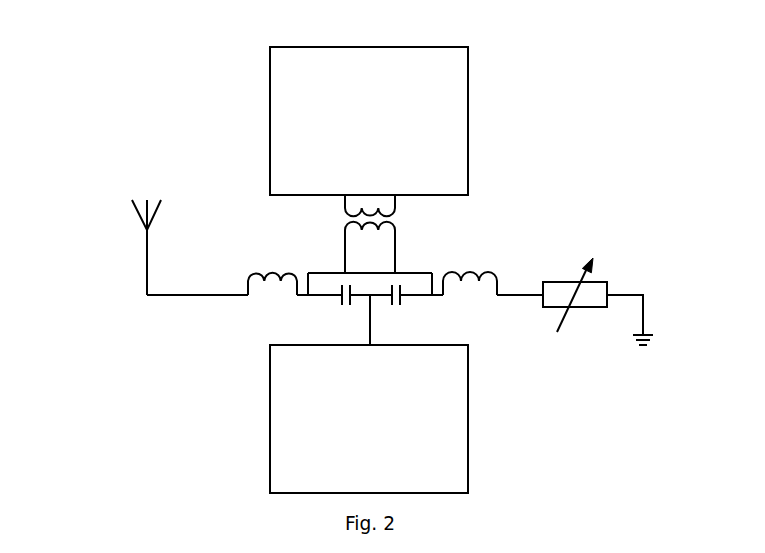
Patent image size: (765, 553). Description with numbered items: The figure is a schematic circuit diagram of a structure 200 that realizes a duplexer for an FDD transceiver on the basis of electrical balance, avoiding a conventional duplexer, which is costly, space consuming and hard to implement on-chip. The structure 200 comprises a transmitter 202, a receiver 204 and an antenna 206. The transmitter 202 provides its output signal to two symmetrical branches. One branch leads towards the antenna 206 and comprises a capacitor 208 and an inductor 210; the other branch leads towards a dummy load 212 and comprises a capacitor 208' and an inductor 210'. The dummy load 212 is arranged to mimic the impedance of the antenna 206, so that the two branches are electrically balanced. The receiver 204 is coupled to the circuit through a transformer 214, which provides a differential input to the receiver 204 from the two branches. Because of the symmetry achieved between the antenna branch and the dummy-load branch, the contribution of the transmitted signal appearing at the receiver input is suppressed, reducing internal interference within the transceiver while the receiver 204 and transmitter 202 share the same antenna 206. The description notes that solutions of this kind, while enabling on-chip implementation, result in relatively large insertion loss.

The structure 200 is at (463, 236).
The transmitter 202 is at (285, 367).
The receiver 204 is at (287, 157).
The antenna 206 is at (147, 231).
The capacitor 208 is at (310, 307).
The capacitor 208' is at (432, 306).
The inductor 210 is at (241, 301).
The inductor 210' is at (492, 310).
The dummy load 212 is at (583, 302).
The transformer 214 is at (357, 220).